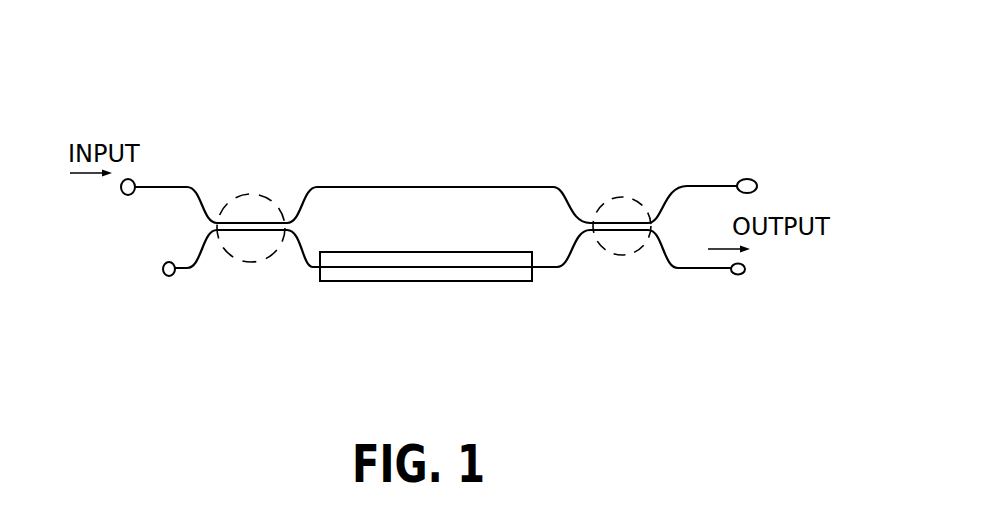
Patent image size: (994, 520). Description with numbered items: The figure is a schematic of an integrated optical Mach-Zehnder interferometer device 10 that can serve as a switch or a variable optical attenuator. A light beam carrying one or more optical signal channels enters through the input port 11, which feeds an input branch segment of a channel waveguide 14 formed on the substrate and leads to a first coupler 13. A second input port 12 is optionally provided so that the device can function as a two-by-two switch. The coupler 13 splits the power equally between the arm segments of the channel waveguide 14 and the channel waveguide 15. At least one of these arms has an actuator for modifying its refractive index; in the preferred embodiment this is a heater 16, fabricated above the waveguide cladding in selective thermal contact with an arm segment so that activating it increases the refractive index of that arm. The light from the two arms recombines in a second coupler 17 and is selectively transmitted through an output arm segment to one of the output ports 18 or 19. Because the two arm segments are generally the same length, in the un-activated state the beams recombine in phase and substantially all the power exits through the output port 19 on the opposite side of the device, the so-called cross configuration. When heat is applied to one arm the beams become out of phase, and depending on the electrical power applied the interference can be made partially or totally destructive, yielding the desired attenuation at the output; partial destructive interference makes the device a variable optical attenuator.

The integrated optical Mach-Zehnder interferometer device 10 is at (213, 78).
The input port 11 is at (123, 194).
The input port 12 is at (162, 274).
The 3 dB coupler 13 is at (252, 205).
The channel waveguide 14 is at (496, 187).
The channel waveguide 15 is at (352, 270).
The heater 16 is at (468, 292).
The second 3 dB coupler 17 is at (630, 212).
The output port 18 is at (733, 170).
The output port 19 is at (757, 278).